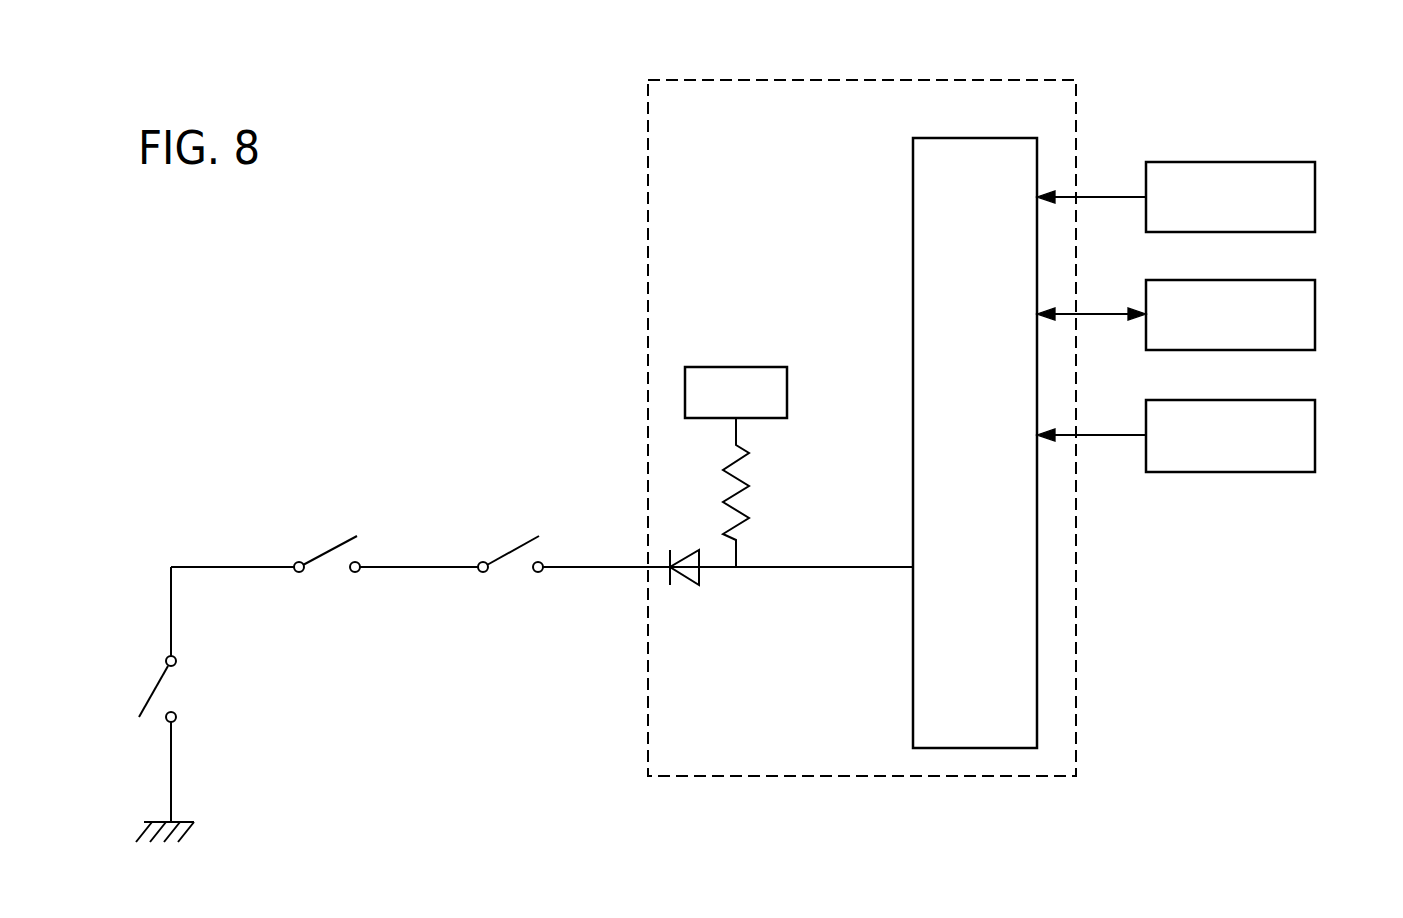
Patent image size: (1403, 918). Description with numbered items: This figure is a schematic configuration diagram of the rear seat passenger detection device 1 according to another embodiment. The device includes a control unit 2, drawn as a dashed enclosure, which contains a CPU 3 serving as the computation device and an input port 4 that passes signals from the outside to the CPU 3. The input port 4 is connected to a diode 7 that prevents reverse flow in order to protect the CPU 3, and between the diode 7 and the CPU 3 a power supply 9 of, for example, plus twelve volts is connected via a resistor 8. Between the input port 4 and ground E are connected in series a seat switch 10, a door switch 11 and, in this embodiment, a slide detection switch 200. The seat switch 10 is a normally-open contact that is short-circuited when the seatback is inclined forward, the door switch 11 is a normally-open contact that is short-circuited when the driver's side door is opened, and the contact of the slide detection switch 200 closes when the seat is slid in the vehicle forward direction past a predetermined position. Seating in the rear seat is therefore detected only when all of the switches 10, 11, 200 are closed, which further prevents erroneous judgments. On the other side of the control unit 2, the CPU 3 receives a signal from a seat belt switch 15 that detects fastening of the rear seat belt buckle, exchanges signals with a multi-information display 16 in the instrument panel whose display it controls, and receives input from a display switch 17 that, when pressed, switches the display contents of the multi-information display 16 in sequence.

The rear seat passenger detection device 1 is at (485, 240).
The control unit 2 is at (895, 78).
The CPU 3 is at (1037, 612).
The input port 4 is at (657, 570).
The diode 7 is at (699, 580).
The resistor 8 is at (740, 484).
The power supply 9 is at (787, 385).
The seat switch 10 is at (518, 547).
The door switch 11 is at (147, 694).
The slide detection switch 200 is at (337, 546).
The seat belt switch 15 is at (1315, 200).
The multi-information display 16 is at (1315, 317).
The display switch 17 is at (1315, 440).
The ground E is at (185, 822).